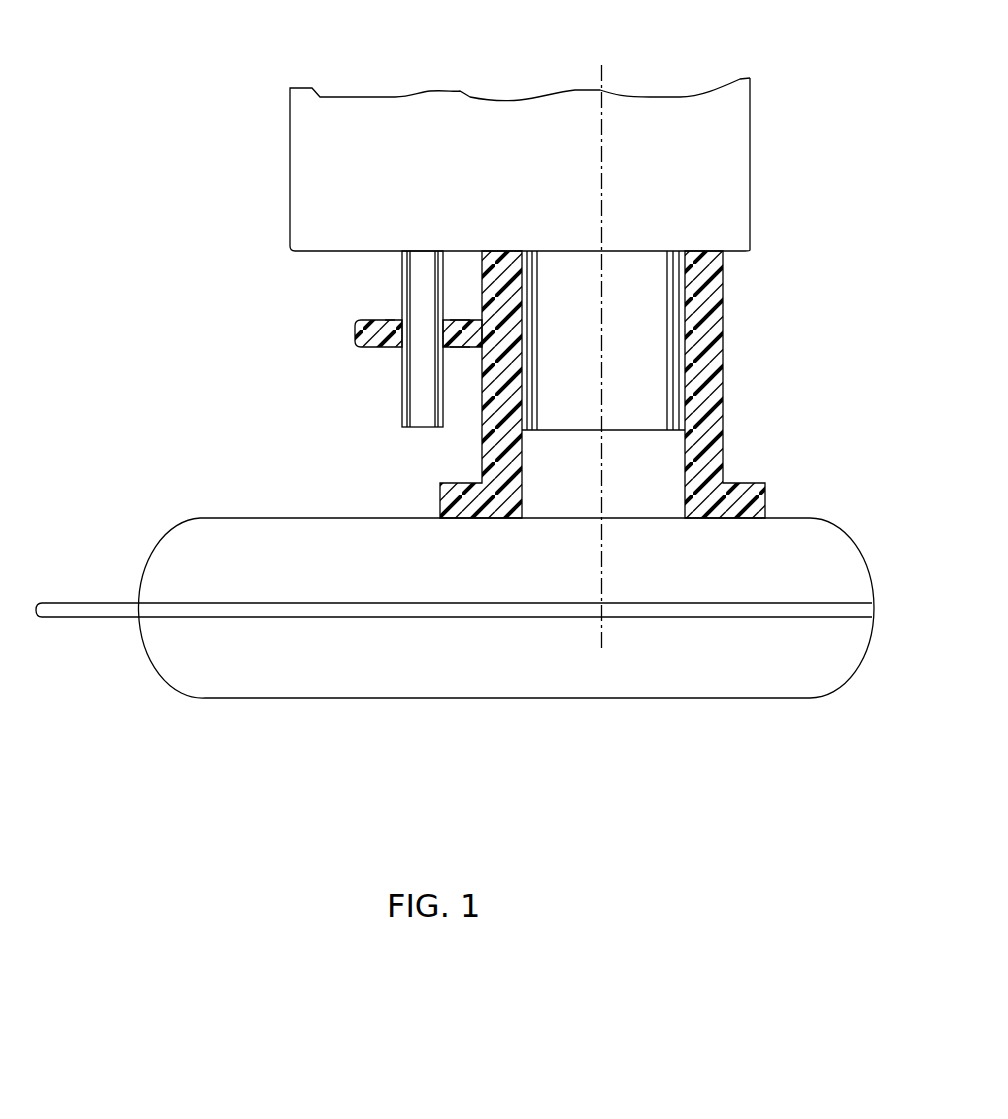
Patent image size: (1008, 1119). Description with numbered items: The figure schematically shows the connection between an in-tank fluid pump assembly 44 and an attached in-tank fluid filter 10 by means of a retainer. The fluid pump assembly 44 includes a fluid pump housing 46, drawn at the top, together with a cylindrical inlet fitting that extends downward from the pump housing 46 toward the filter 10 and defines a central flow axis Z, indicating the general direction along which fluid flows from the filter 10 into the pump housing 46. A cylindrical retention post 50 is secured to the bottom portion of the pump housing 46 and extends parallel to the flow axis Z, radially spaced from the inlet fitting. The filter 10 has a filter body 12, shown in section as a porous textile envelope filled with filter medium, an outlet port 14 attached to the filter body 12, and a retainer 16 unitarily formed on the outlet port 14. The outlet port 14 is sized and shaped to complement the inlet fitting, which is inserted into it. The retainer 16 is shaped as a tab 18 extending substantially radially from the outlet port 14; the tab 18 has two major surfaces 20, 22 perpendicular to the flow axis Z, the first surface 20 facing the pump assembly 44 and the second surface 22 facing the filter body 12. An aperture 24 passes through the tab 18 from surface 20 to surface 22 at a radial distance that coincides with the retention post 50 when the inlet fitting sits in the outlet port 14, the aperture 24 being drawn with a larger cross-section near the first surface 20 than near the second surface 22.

The fluid filter 10 is at (300, 512).
The filter body 12 is at (349, 678).
The outlet port 14 is at (712, 462).
The retainer 16 is at (357, 325).
The tab 18 is at (680, 332).
The first major surface 20 is at (459, 322).
The second major surface 22 is at (459, 348).
The aperture 24 is at (396, 330).
The fluid pump assembly 44 is at (262, 143).
The fluid pump housing 46 is at (750, 180).
The retention post 50 is at (421, 418).
The central flow axis Z is at (602, 72).